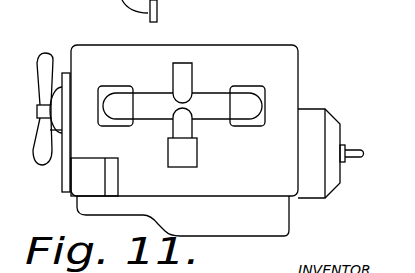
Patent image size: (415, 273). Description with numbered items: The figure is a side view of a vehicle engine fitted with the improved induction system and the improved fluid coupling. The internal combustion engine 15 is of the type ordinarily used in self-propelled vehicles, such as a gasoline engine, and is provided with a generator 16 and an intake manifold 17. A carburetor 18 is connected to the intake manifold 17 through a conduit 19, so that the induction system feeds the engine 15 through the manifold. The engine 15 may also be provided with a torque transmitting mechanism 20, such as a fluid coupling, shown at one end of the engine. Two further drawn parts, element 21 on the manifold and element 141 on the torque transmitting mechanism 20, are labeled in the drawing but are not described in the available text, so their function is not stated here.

The internal combustion engine 15 is at (232, 63).
The generator 16 is at (87, 167).
The intake manifold 17 is at (219, 108).
The carburetor 18 is at (192, 155).
The conduit 19 is at (173, 129).
The torque transmitting mechanism 20 is at (310, 124).
The upper post 21 is at (193, 78).
The shaft 141 is at (352, 148).